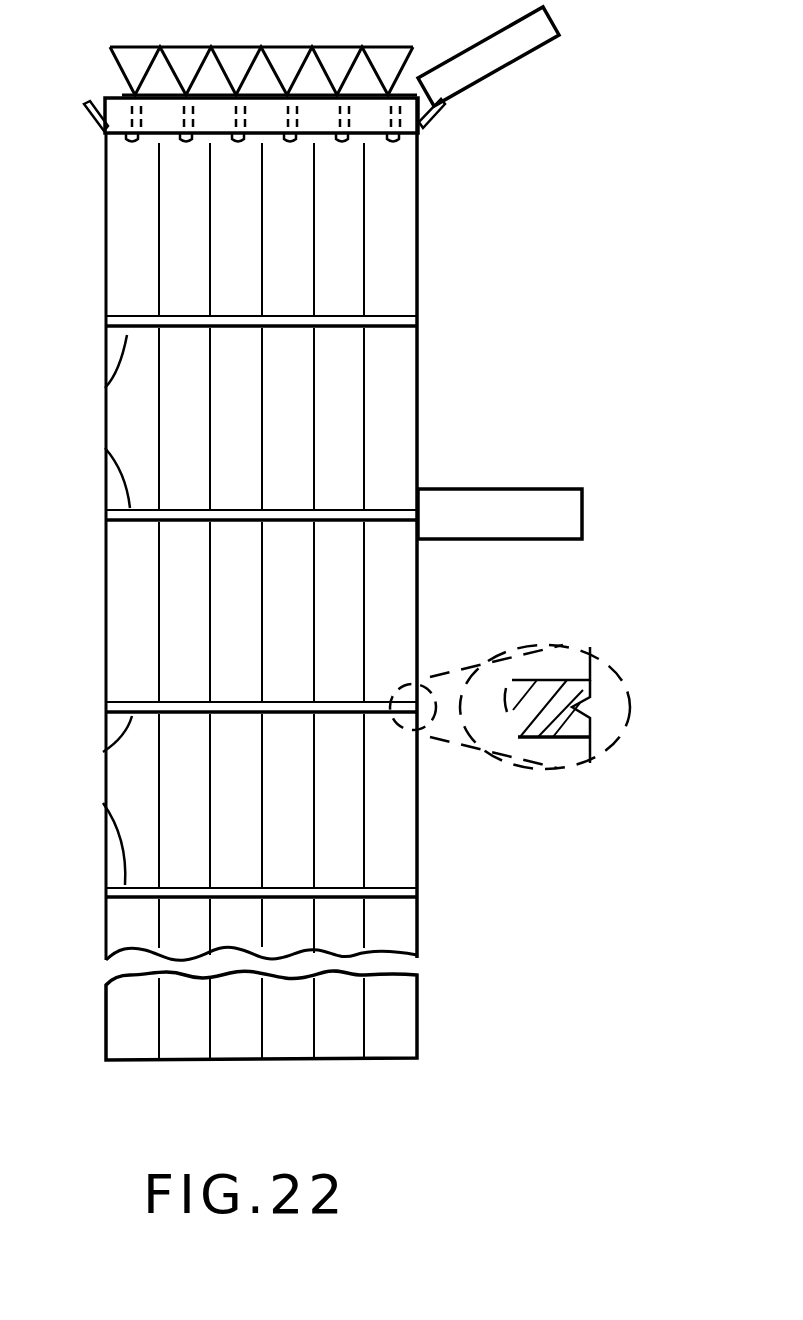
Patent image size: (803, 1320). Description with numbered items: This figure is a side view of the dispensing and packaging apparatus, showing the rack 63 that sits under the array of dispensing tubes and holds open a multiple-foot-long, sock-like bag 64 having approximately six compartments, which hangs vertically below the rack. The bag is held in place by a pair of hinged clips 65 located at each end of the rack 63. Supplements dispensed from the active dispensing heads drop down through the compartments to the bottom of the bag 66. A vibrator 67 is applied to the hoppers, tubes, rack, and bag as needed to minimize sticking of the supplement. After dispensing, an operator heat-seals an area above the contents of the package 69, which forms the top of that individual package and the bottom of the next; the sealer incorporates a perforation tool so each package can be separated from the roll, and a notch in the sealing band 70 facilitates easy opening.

The rack 63 is at (103, 93).
The sock-like bag 64 is at (102, 282).
The hinged clips 65 is at (100, 118).
The bottom of the bag 66 is at (117, 1018).
The vibrator 67 is at (505, 58).
The heat-sealed area 69 is at (105, 445).
The notch in the sealing band 70 is at (628, 713).